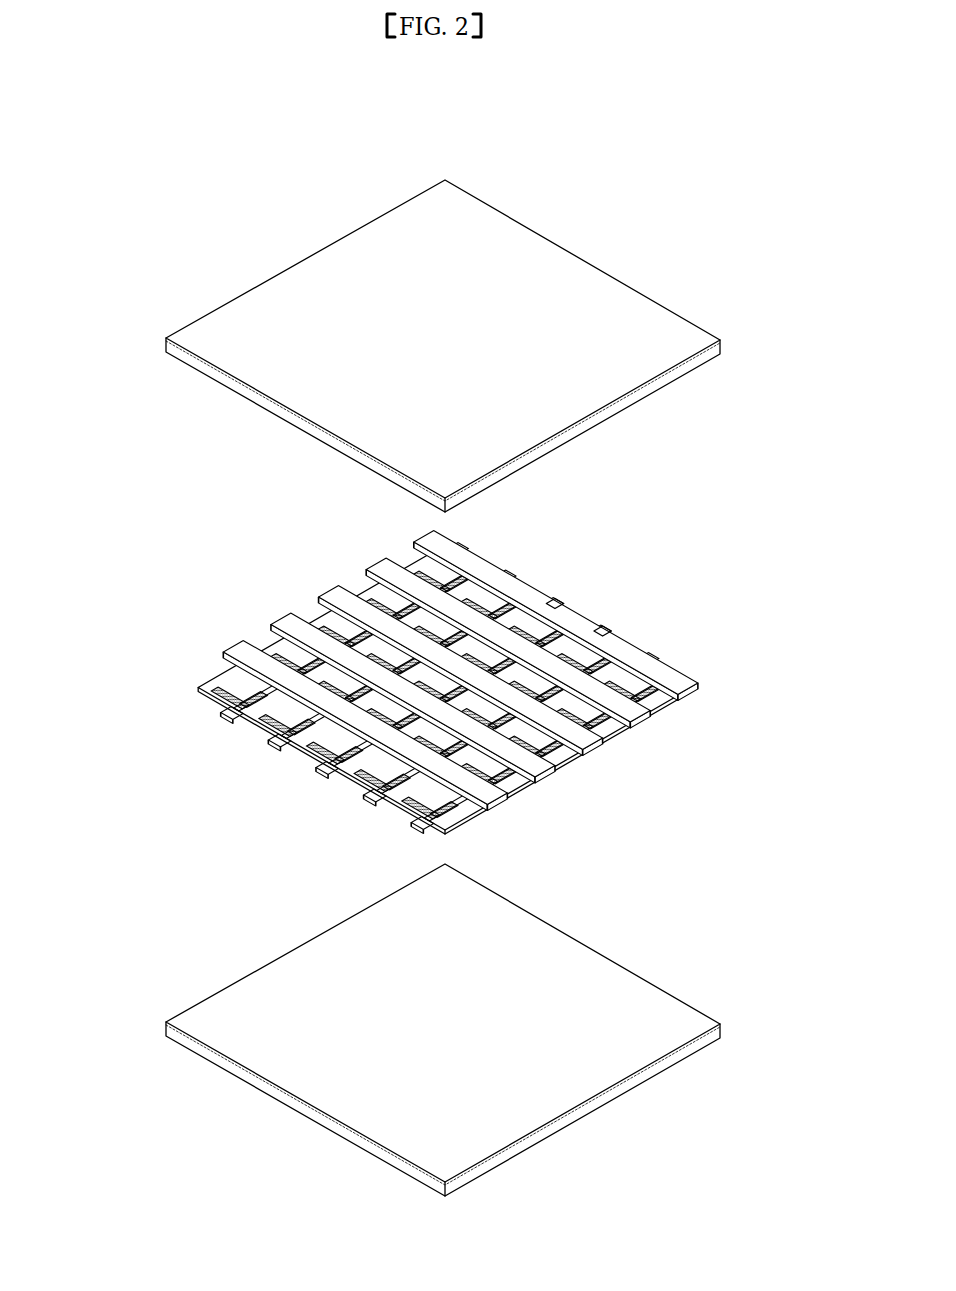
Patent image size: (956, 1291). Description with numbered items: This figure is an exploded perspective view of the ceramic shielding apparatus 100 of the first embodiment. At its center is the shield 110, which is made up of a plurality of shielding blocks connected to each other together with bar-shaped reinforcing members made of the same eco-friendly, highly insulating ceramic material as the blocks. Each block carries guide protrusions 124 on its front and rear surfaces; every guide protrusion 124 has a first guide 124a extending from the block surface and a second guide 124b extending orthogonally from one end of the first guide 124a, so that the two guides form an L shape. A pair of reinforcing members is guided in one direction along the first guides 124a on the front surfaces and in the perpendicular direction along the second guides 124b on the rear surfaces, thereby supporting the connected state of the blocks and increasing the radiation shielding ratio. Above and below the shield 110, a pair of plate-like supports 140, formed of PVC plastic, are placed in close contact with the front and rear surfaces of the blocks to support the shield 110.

The ceramic shielding apparatus 100 is at (466, 128).
The shield 110 is at (750, 565).
The guide protrusions 124 is at (505, 500).
The first guide 124a is at (528, 638).
The second guide 124b is at (547, 638).
The supports 140 is at (262, 358).